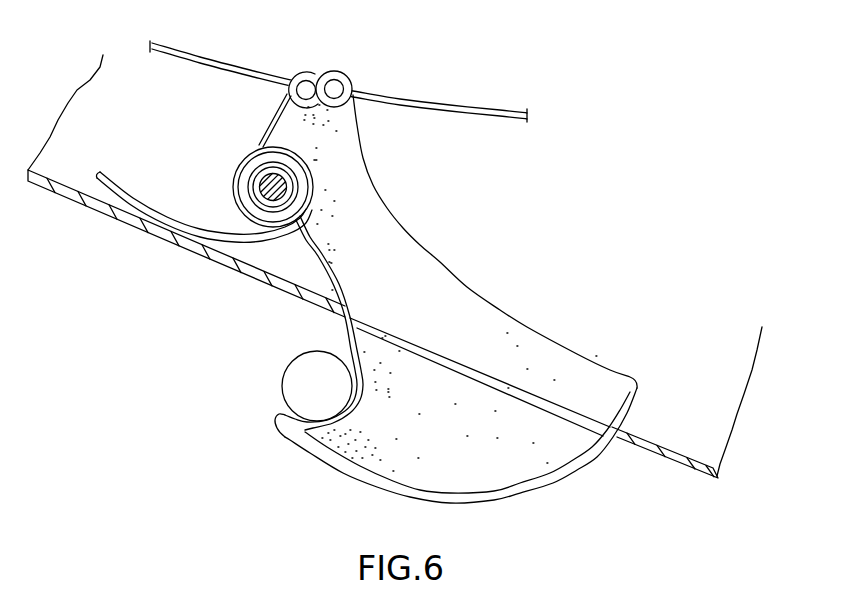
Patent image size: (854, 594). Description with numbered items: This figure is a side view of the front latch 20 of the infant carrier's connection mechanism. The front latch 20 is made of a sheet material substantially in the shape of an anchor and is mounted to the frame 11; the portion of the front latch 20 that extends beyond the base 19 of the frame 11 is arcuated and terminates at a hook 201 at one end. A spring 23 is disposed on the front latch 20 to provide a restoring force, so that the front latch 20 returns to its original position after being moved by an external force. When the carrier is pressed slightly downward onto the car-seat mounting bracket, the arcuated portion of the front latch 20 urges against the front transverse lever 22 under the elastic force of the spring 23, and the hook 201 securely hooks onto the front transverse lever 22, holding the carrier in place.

The frame 11 is at (622, 282).
The base 19 is at (110, 212).
The front latch 20 is at (397, 242).
The front transverse lever 22 is at (330, 352).
The spring 23 is at (236, 182).
The hook 201 is at (278, 428).